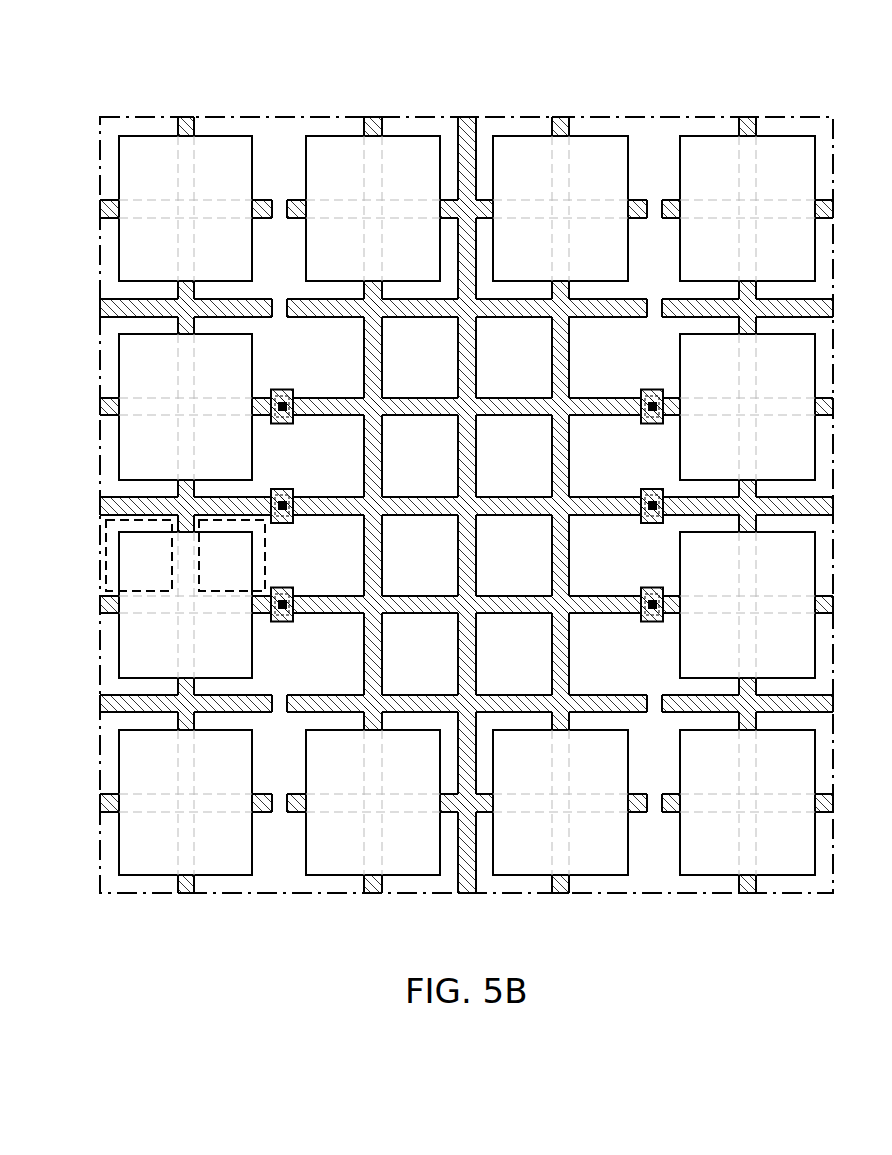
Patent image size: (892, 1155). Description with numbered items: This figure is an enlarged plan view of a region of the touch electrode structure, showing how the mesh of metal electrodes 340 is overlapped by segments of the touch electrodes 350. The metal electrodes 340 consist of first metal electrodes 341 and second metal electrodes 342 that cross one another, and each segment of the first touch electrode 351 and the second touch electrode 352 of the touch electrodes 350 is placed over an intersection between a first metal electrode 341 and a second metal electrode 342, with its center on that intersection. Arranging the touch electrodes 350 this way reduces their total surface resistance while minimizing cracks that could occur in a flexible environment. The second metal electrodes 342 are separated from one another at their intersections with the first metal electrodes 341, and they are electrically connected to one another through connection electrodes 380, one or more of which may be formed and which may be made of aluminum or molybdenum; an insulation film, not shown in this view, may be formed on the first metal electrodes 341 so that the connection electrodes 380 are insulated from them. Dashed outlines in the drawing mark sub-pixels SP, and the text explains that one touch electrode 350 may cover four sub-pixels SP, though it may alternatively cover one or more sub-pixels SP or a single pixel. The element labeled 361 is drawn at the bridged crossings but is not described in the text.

The metal electrodes 340 is at (363, 38).
The first metal electrode 341 is at (365, 117).
The second metal electrode 342 is at (178, 117).
The touch electrodes 350 is at (718, 38).
The first touch electrode 351 is at (604, 155).
The second touch electrode 352 is at (708, 155).
The connection electrodes 380 is at (510, 410).
The bridge line with contact 361 is at (282, 614).
The sub-pixel SP is at (132, 520).